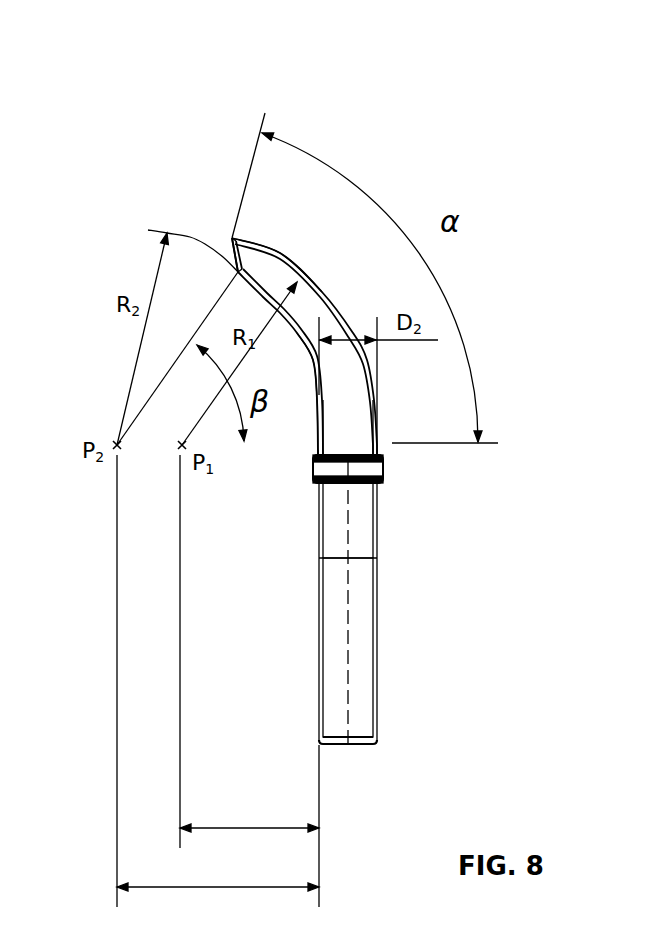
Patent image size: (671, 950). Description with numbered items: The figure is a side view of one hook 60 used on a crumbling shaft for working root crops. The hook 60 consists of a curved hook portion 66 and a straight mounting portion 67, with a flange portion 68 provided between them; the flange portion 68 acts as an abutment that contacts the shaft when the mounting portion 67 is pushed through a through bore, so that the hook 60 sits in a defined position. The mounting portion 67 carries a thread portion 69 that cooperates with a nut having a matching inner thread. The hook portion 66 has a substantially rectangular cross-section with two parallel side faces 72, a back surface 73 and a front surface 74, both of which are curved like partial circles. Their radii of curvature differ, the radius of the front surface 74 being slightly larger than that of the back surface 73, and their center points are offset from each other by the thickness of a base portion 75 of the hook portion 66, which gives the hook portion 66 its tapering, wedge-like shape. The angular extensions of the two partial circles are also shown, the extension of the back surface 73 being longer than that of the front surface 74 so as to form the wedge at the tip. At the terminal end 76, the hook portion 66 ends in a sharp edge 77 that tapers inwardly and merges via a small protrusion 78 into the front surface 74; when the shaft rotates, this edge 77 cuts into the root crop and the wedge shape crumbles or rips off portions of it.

The hook 60 is at (438, 115).
The hook portion 66 is at (322, 293).
The mounting portion 67 is at (367, 541).
The flange portion 68 is at (388, 484).
The thread portion 69 is at (375, 685).
The side faces 72 is at (350, 423).
The back surface 73 is at (279, 255).
The front surface 74 is at (313, 428).
The base portion 75 is at (364, 446).
The terminal end 76 is at (222, 188).
The sharp edge 77 is at (229, 236).
The small protrusion 78 is at (234, 273).